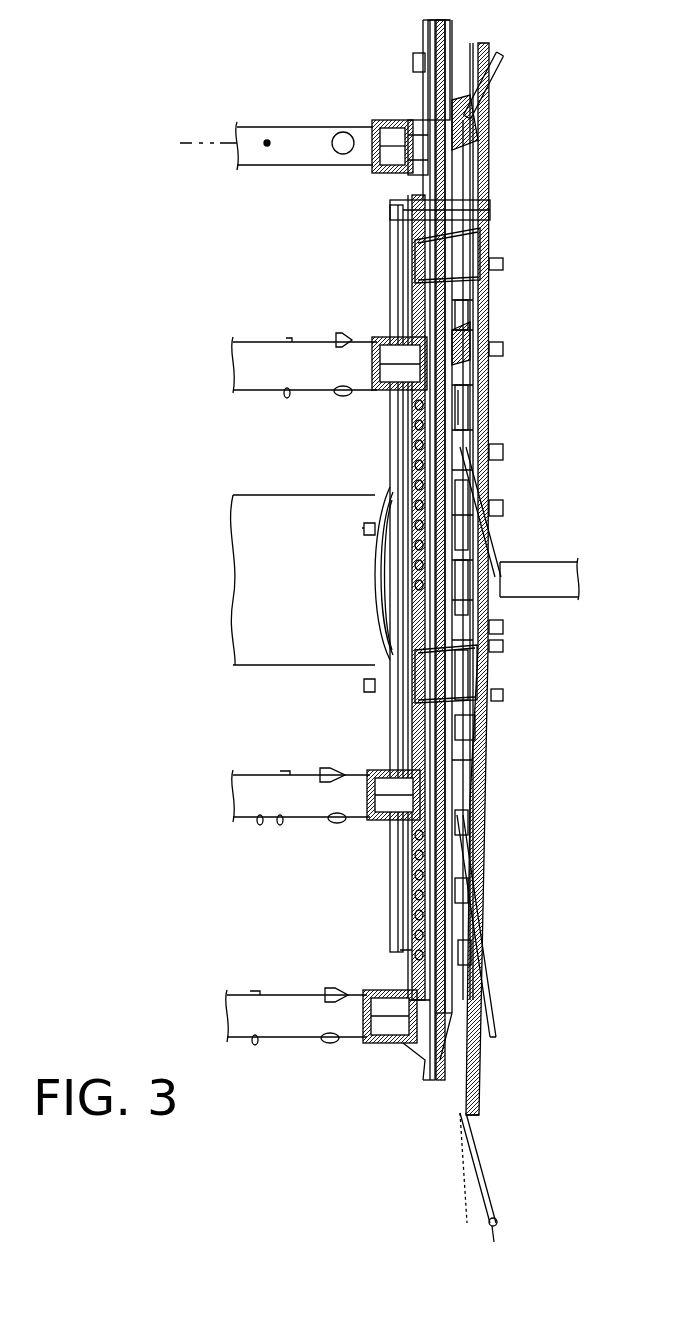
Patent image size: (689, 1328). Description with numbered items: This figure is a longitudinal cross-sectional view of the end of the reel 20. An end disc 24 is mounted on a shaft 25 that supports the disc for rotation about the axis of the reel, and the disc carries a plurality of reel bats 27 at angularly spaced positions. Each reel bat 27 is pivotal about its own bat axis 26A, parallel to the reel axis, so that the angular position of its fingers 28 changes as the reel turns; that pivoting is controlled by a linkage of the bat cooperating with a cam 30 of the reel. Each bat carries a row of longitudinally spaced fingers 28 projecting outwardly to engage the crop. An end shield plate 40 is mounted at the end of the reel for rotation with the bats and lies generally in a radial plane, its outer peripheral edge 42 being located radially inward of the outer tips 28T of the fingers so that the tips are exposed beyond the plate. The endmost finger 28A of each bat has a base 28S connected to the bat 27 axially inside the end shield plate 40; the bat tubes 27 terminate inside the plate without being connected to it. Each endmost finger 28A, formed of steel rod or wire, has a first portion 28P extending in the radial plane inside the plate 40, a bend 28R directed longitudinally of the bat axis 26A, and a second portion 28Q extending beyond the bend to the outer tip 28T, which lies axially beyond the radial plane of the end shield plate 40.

The reel 20 is at (527, 257).
The end disc 24 is at (402, 268).
The shaft 25 is at (265, 510).
The bat axis 26A is at (202, 147).
The reel bat 27 is at (304, 126).
The bat fingers 28 is at (510, 72).
The endmost finger 28A is at (500, 527).
The first portion 28P is at (483, 823).
The second portion 28Q is at (483, 952).
The bend 28R is at (483, 890).
The base 28S is at (487, 337).
The outer tip 28T is at (510, 580).
The cam 30 is at (483, 728).
The end shield plate 40 is at (487, 315).
The outer peripheral edge 42 is at (480, 44).